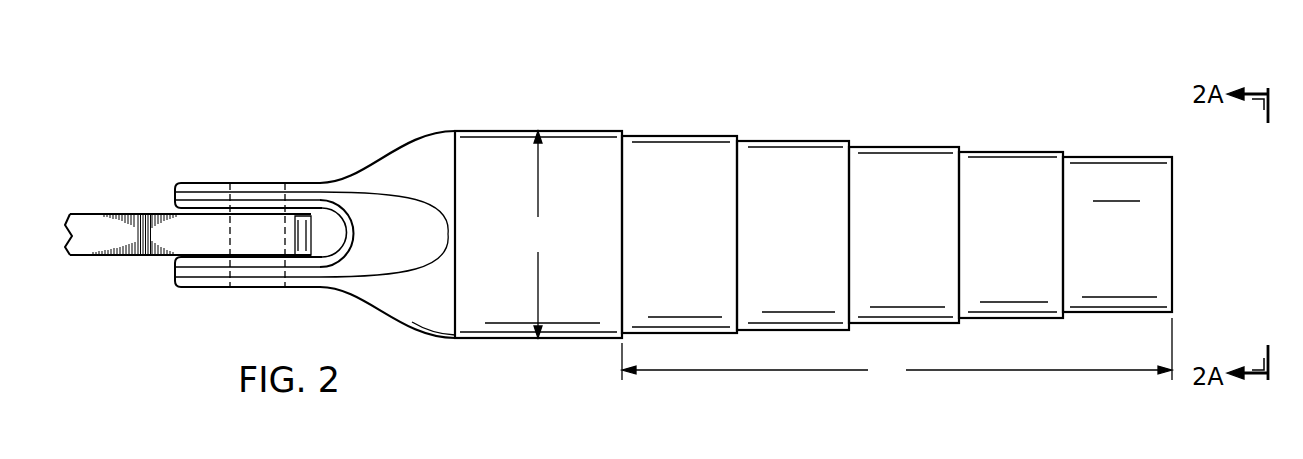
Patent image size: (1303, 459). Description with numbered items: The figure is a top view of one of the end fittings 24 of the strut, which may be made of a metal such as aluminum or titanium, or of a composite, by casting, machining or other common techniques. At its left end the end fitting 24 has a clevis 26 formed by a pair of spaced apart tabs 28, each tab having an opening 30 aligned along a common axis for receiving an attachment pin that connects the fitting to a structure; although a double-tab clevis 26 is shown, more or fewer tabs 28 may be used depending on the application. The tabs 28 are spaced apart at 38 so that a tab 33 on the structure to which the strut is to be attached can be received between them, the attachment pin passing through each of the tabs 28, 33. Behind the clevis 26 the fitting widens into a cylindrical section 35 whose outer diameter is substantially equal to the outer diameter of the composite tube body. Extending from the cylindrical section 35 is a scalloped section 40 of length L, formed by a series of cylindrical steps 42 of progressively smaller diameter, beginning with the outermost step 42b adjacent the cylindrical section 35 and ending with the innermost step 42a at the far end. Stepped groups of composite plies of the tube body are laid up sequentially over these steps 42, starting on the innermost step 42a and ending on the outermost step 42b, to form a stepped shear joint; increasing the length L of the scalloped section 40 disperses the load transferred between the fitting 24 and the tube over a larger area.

The end fitting 24 is at (746, 205).
The clevis 26 is at (264, 238).
The tabs 28 is at (205, 183).
The opening 30 is at (283, 195).
The tab 33 is at (92, 214).
The cylindrical section 35 is at (485, 130).
The spacing 38 is at (171, 261).
The scalloped section 40 is at (897, 189).
The cylindrical steps 42 is at (897, 196).
The innermost step 42a is at (1085, 147).
The outermost step 42b is at (703, 120).